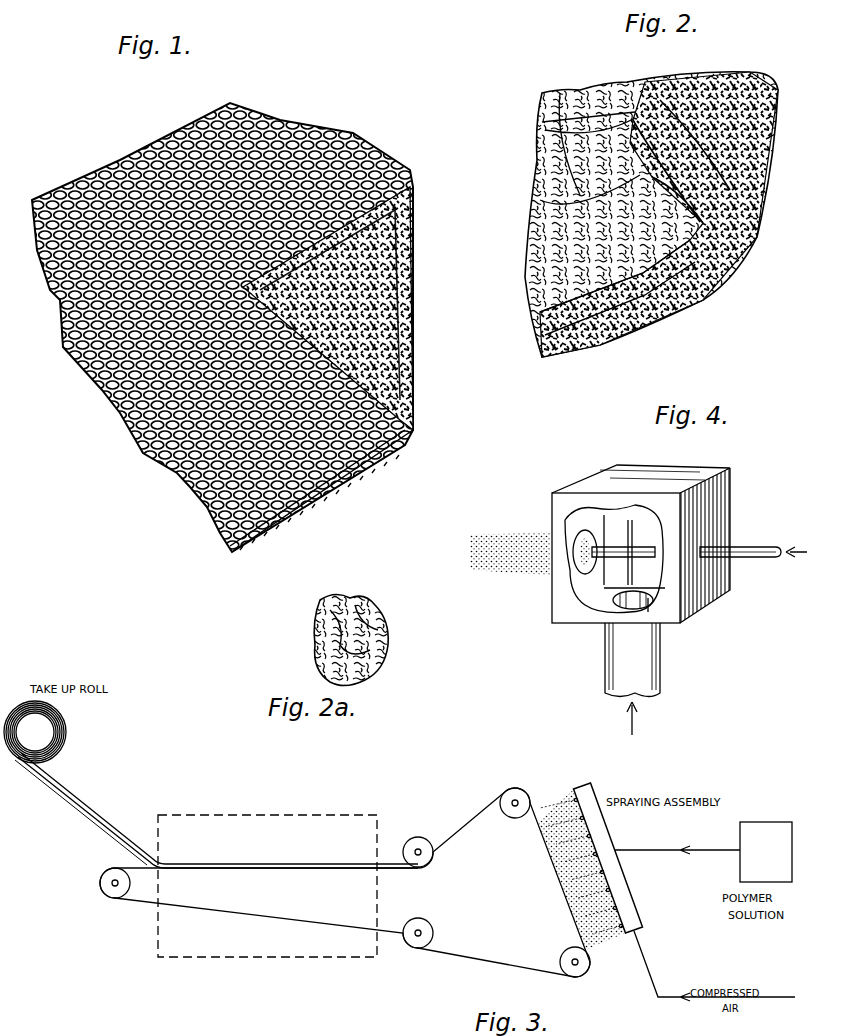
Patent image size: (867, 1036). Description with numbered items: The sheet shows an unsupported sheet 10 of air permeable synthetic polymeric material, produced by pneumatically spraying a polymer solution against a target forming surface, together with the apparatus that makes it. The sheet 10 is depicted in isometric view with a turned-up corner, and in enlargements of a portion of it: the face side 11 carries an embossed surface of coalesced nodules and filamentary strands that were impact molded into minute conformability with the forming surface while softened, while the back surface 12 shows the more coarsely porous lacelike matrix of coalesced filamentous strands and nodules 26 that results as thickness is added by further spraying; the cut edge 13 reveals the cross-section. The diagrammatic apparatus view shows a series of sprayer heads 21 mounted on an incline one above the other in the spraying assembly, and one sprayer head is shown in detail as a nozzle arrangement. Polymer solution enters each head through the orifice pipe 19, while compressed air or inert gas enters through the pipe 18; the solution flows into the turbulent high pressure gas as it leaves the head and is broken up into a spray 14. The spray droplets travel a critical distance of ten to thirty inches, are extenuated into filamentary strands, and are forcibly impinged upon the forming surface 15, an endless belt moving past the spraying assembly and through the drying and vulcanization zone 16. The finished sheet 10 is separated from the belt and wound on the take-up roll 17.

In FIG. 1, the unsupported sheet 10 is at (244, 326).
In FIG. 2, the unsupported sheet 10 is at (649, 211).
In FIG. 3, the unsupported sheet 10 is at (215, 811).
In FIG. 1, the face side 11 is at (170, 445).
In FIG. 2, the face side 11 is at (540, 185).
In FIG. 3, the face side 11 is at (80, 813).
In FIG. 1, the back surface 12 is at (350, 308).
In FIG. 2, the back surface 12 is at (671, 204).
In FIG. 2A, the back surface 12 is at (323, 632).
In FIG. 3, the back surface 12 is at (72, 795).
In FIG. 1, the cut edge 13 is at (277, 530).
In FIG. 2, the cut edge 13 is at (588, 343).
In FIG. 4, the spray 14 is at (513, 570).
In FIG. 3, the spray 14 is at (553, 800).
In FIG. 3, the forming surface 15 is at (500, 950).
In FIG. 3, the drying and vulcanization zone 16 is at (177, 933).
In FIG. 3, the take-up roll 17 is at (66, 732).
In FIG. 4, the pipe 18 is at (666, 684).
In FIG. 3, the pipe 18 is at (648, 975).
In FIG. 4, the orifice pipe 19 is at (760, 548).
In FIG. 3, the orifice pipe 19 is at (655, 851).
In FIG. 4, the sprayer heads 21 is at (679, 600).
In FIG. 3, the sprayer heads 21 is at (630, 912).
In FIG. 1, the filamentous strands and nodules 26 is at (415, 258).
In FIG. 2, the filamentous strands and nodules 26 is at (720, 85).
In FIG. 2A, the filamentous strands and nodules 26 is at (378, 625).